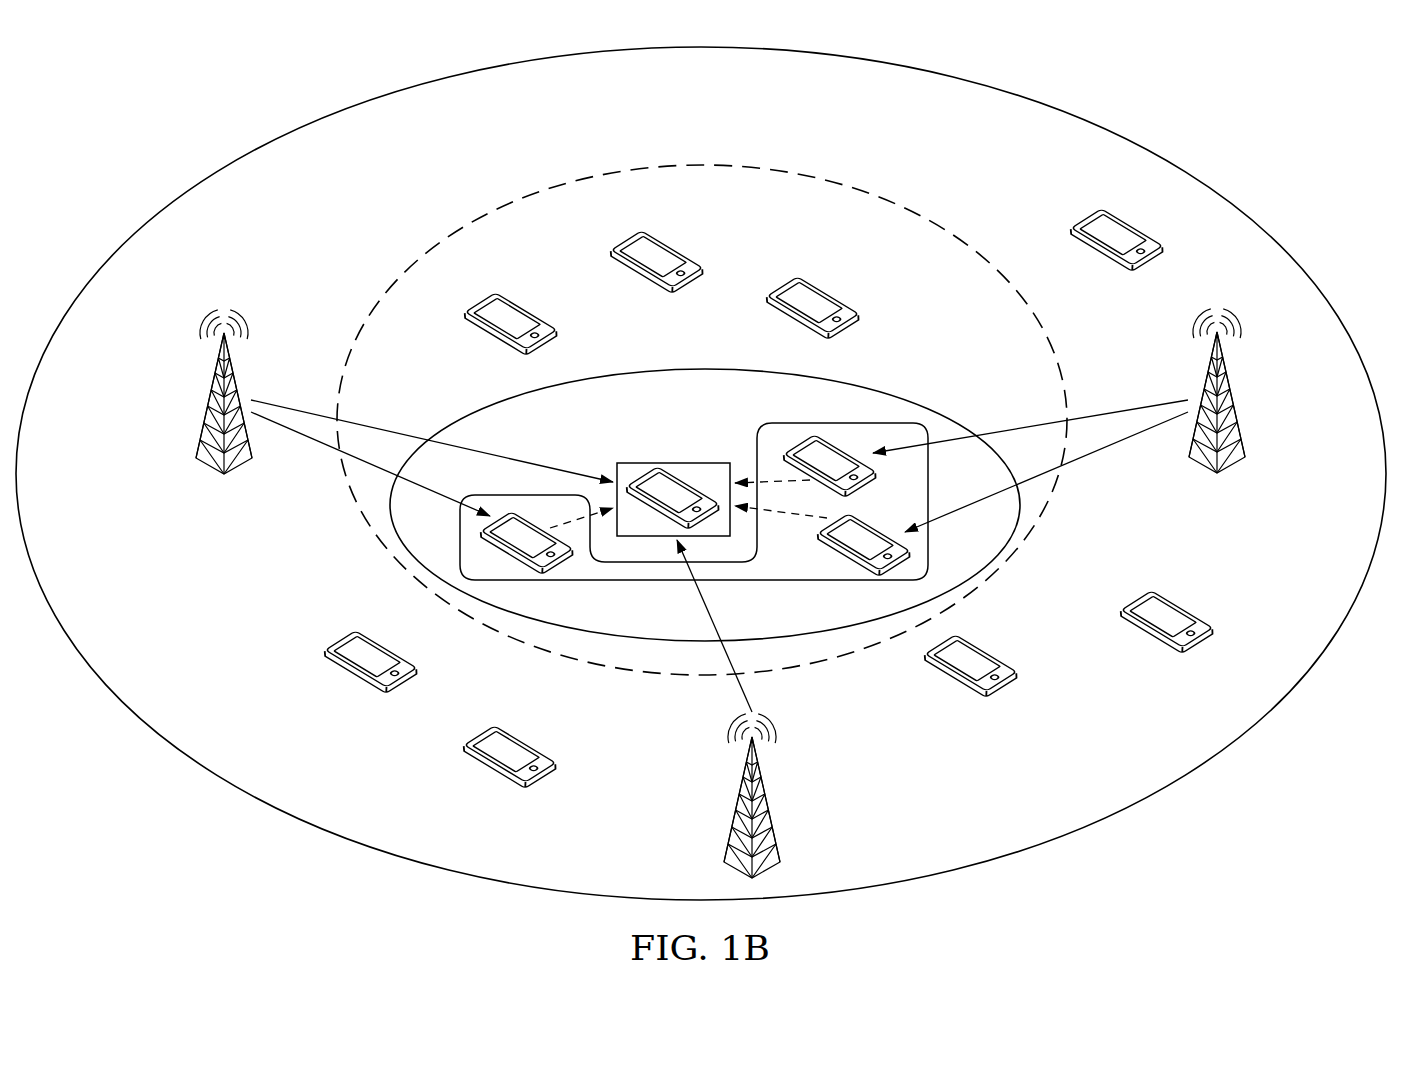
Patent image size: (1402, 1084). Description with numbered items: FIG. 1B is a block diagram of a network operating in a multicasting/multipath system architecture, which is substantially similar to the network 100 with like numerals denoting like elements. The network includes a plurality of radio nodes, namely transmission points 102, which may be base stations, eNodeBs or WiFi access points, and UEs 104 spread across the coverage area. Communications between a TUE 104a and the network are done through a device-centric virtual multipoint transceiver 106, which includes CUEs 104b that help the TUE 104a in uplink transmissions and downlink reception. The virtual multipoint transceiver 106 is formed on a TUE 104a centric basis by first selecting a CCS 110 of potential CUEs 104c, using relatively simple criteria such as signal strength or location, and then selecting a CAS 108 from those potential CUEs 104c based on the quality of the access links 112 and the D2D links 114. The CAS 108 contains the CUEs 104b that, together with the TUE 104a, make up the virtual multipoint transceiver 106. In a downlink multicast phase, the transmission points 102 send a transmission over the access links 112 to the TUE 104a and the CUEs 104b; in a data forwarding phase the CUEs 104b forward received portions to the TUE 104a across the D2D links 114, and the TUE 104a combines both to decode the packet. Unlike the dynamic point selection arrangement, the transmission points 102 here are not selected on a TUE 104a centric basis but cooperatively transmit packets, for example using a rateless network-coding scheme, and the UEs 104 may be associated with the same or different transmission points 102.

The network 100 is at (248, 152).
The transmission points 102 is at (212, 403).
The UEs 104 is at (356, 672).
The TUE 104a is at (647, 462).
The CUEs 104b is at (562, 567).
The potential CUEs 104c is at (527, 312).
The virtual multipoint transceiver 106 is at (640, 370).
The CAS 108 is at (755, 450).
The CCS 110 is at (564, 186).
The access links 112 is at (277, 403).
The D2D links 114 is at (780, 478).